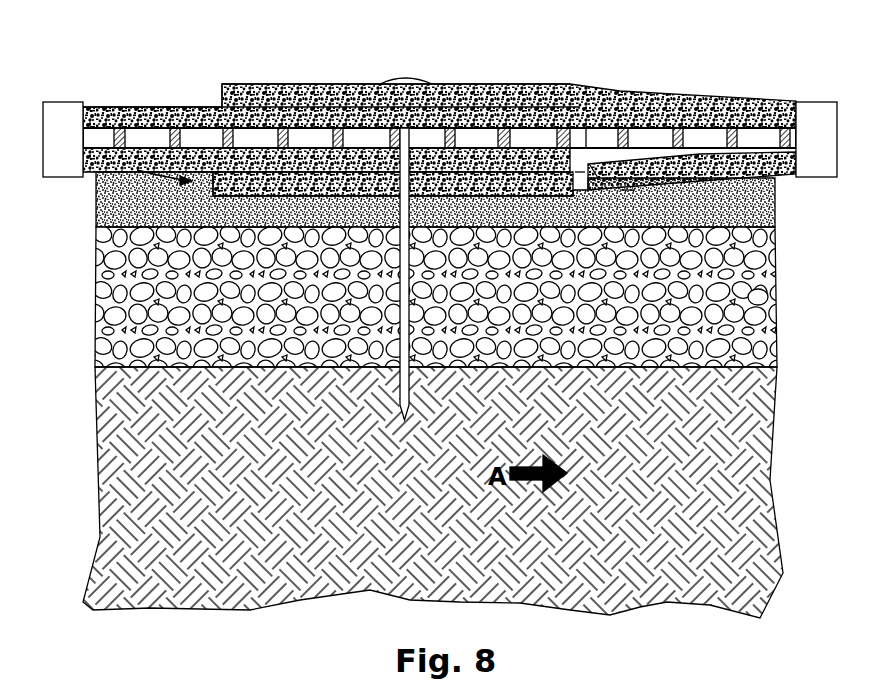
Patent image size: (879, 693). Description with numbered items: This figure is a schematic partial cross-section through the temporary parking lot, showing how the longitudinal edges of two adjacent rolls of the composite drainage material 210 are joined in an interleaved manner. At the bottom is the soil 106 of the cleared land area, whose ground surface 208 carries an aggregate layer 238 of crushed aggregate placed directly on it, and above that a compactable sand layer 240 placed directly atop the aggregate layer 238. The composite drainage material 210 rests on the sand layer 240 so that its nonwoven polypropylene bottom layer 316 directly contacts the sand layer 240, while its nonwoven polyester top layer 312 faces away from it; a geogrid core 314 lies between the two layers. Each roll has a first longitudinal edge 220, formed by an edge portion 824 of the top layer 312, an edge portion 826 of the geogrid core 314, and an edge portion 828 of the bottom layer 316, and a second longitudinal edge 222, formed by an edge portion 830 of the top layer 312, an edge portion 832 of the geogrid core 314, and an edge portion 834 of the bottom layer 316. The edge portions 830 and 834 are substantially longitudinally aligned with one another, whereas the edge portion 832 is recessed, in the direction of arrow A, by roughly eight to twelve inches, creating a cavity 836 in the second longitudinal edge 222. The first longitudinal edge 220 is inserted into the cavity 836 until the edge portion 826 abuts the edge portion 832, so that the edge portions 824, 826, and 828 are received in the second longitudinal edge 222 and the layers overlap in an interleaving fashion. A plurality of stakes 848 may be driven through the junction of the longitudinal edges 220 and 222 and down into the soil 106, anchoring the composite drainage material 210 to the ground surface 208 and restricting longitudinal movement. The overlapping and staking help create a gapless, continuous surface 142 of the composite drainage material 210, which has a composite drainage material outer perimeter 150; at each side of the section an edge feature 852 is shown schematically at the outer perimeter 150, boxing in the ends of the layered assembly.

The soil 106 is at (122, 585).
The continuous surface 142 is at (166, 108).
The composite drainage material outer perimeter 150 is at (83, 118).
The ground surface 208 is at (199, 160).
The composite drainage material 210 is at (117, 98).
The first longitudinal edge 220 is at (628, 165).
The second longitudinal edge 222 is at (200, 195).
The aggregate layer 238 is at (762, 298).
The sand layer 240 is at (773, 200).
The nonwoven polyester top layer 312 is at (133, 107).
The geogrid core 314 is at (288, 138).
The nonwoven polypropylene bottom layer 316 is at (92, 178).
The edge portion of the top layer 824 is at (586, 140).
The edge portion of the geogrid core 826 is at (560, 135).
The edge portion of the bottom layer 828 is at (580, 160).
The edge portion of the top layer 830 is at (223, 97).
The edge portion of the geogrid core 832 is at (590, 166).
The edge portion of the bottom layer 834 is at (238, 172).
The cavity 836 is at (473, 140).
The stakes 848 is at (410, 78).
The edge restraint member 852 is at (82, 153).